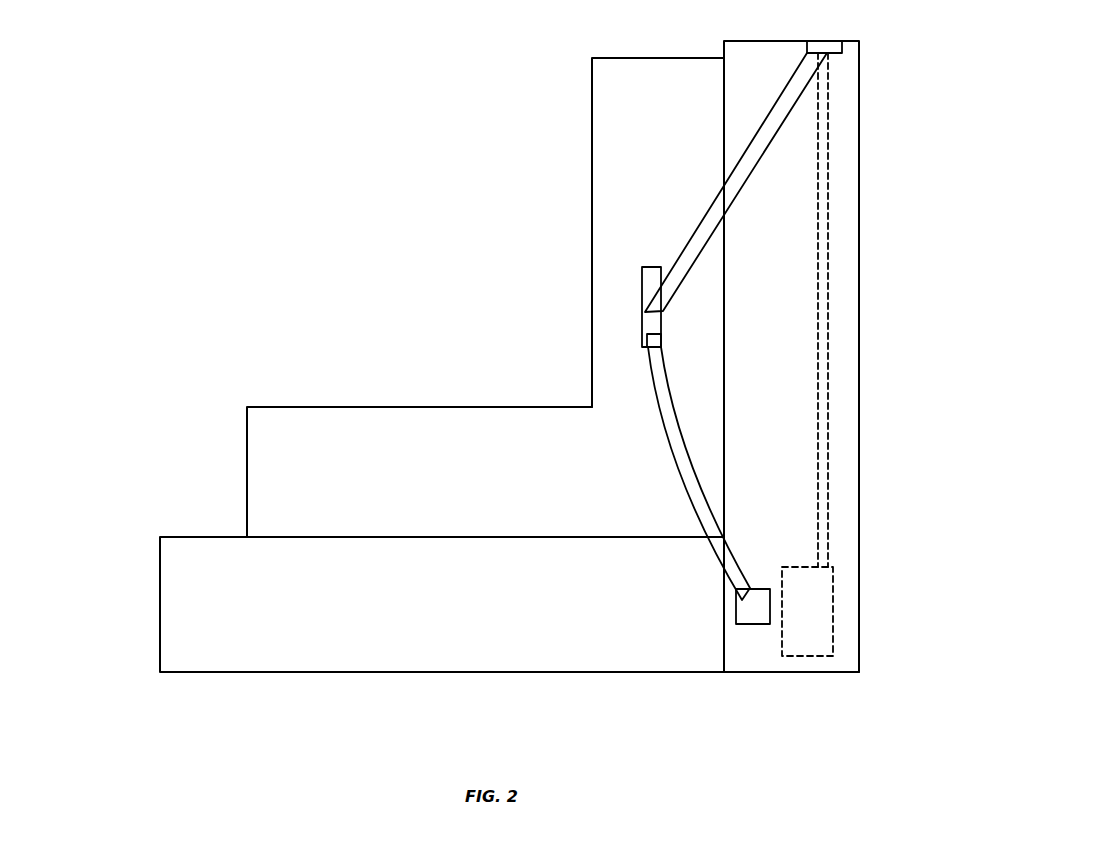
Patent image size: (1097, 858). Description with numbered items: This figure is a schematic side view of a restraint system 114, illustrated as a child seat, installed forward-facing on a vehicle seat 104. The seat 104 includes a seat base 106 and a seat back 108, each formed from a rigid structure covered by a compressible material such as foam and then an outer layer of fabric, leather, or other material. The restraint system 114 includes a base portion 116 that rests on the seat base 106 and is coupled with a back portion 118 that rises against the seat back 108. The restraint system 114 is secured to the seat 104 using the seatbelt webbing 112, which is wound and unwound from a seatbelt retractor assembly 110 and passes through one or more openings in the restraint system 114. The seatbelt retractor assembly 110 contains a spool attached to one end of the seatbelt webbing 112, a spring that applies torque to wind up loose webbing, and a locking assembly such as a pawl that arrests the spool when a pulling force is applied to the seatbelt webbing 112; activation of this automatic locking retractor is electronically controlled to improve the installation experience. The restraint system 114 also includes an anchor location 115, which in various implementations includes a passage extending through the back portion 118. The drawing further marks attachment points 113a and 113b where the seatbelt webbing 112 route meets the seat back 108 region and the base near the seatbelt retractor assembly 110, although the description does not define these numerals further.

The seat 104 is at (470, 156).
The seat base 106 is at (150, 620).
The seat back 108 is at (852, 196).
The seatbelt retractor assembly 110 is at (833, 607).
The seatbelt webbing 112 is at (715, 272).
The upper attachment point 113a is at (845, 47).
The lower attachment point 113b is at (736, 620).
The restraint system 114 is at (458, 320).
The anchor location 115 is at (665, 321).
The base portion 116 is at (333, 413).
The back portion 118 is at (600, 243).